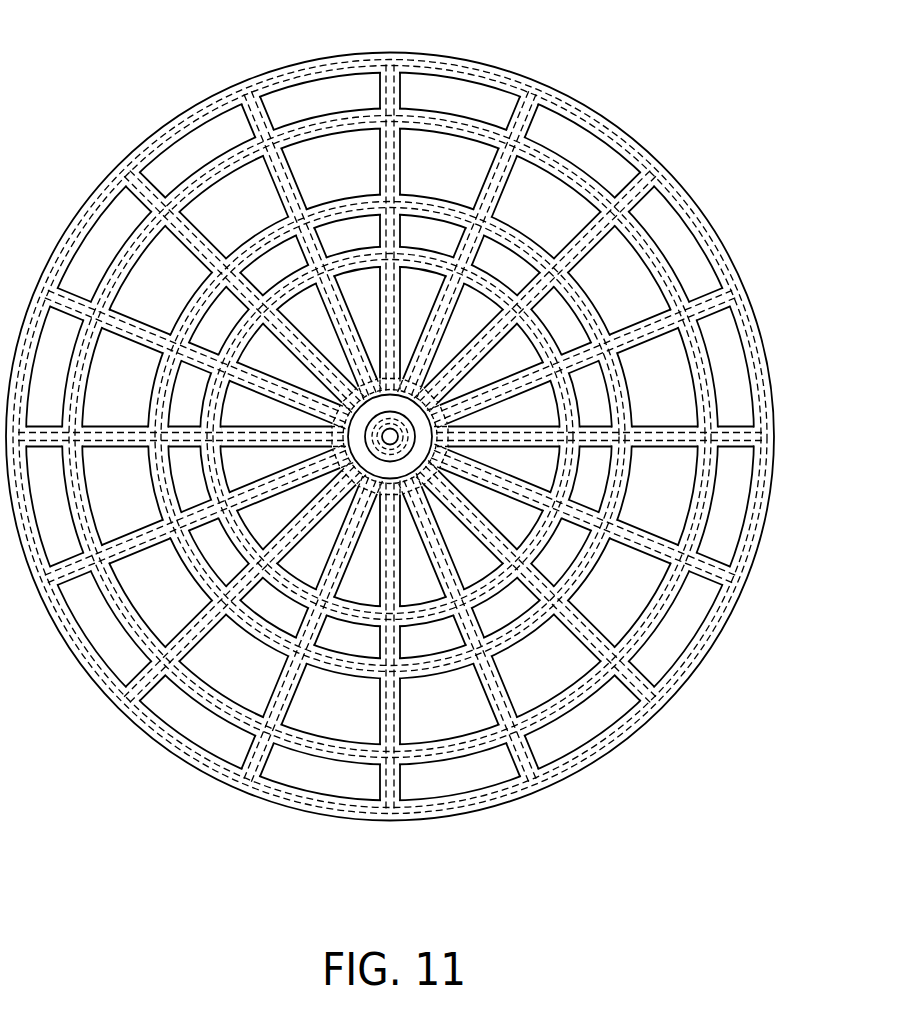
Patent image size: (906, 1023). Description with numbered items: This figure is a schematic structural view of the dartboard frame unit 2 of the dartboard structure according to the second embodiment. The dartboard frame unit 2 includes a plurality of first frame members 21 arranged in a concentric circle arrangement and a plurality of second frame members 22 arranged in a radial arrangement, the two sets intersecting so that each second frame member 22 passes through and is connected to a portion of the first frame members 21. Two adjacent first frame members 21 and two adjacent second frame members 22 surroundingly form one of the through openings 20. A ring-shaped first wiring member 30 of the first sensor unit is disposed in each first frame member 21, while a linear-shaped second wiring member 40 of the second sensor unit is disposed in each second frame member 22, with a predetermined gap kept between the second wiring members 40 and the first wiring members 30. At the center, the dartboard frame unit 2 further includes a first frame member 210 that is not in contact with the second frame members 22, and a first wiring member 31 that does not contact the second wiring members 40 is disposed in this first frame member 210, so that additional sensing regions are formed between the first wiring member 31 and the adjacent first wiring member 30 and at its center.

The dartboard frame unit 2 is at (515, 72).
The through opening 20 is at (590, 132).
The first frame member 21 is at (180, 117).
The second frame member 22 is at (273, 110).
The first wiring member 30 is at (753, 326).
The second wiring member 40 is at (672, 205).
The first frame member 210 is at (385, 458).
The first wiring member 31 is at (398, 453).